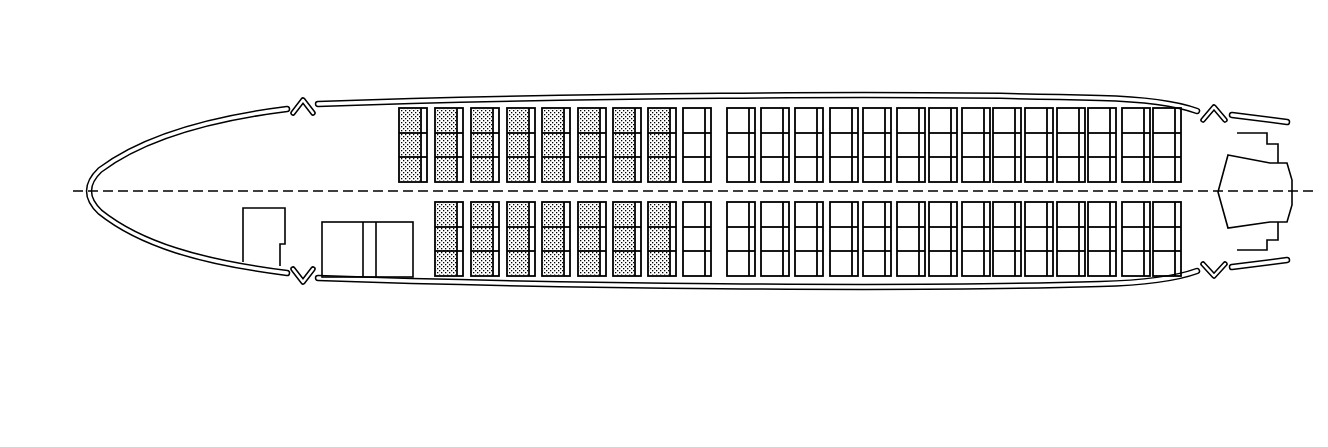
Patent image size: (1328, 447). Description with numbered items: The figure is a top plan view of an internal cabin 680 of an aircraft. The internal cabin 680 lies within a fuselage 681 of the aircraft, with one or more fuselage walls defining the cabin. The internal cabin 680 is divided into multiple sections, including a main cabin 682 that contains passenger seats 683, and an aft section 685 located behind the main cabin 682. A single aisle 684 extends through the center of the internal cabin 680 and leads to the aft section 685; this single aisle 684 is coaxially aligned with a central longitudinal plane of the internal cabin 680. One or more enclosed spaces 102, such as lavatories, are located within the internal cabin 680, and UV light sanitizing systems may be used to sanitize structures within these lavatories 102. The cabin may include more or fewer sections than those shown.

The internal cabin 680 is at (319, 45).
The fuselage 681 is at (505, 100).
The main cabin 682 is at (448, 125).
The passenger seats 683 is at (695, 127).
The single aisle 684 is at (808, 185).
The aft section 685 is at (1200, 128).
The enclosed spaces 102 is at (368, 250).